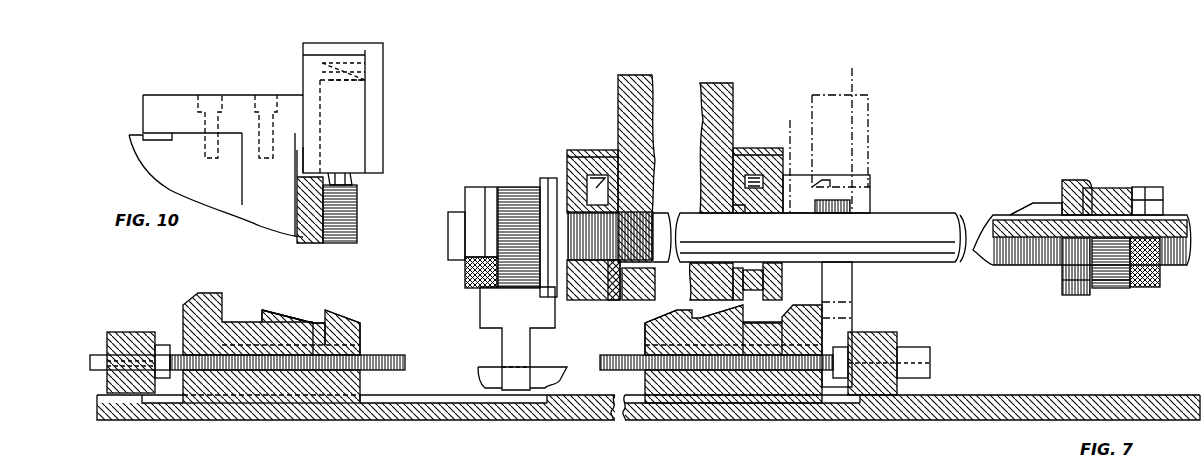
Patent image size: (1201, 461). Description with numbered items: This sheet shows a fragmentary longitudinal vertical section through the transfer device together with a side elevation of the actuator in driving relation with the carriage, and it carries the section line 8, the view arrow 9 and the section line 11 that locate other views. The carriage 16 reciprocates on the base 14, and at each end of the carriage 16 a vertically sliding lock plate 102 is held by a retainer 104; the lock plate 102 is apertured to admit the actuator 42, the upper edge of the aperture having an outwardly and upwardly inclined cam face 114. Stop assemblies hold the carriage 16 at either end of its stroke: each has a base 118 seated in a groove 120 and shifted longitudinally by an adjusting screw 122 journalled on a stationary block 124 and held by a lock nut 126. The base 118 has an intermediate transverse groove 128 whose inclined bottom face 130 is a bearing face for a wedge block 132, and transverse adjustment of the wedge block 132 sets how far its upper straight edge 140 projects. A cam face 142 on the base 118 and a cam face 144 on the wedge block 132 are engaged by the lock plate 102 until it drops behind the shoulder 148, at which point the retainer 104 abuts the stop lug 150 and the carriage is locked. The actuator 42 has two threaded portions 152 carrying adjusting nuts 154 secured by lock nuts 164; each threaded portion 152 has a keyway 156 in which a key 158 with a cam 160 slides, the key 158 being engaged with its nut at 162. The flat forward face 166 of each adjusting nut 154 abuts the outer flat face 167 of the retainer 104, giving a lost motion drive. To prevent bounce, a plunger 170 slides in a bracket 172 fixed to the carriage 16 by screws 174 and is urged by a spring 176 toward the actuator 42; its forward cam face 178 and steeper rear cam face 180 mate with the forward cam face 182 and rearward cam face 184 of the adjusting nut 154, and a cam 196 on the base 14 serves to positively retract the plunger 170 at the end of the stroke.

In FIG. 7, the section line 8- 8 is at (765, 140).
In FIG. 7, the view arrow 9 is at (163, 258).
In FIG. 7, the section line 11- 11 is at (852, 62).
In FIG. 7, the base 14 is at (1085, 395).
In FIG. 10, the carriage 16 is at (152, 162).
In FIG. 7, the carriage 16 is at (618, 85).
In FIG. 7, the actuator 42 is at (928, 215).
In FIG. 7, the sliding lock plate 102 is at (740, 195).
In FIG. 10, the retainer 104 is at (258, 218).
In FIG. 7, the retainer 104 is at (578, 152).
In FIG. 7, the cam face 114 is at (758, 208).
In FIG. 7, the base 118 is at (360, 385).
In FIG. 7, the groove 120 is at (370, 408).
In FIG. 7, the adjusting screw 122 is at (392, 352).
In FIG. 7, the stationary block 124 is at (130, 332).
In FIG. 7, the lock nut 126 is at (160, 345).
In FIG. 7, the transversely extending groove 128 is at (264, 310).
In FIG. 7, the inclined bottom face 130 is at (322, 333).
In FIG. 7, the wedge block 132 is at (306, 318).
In FIG. 7, the upper straight edge 140 is at (280, 308).
In FIG. 7, the cam face 142 is at (357, 320).
In FIG. 7, the cam face 144 is at (288, 315).
In FIG. 7, the shoulder 148 is at (263, 322).
In FIG. 7, the stop lug 150 is at (195, 305).
In FIG. 7, the threaded portion 152 is at (456, 203).
In FIG. 7, the adjusting nut 154 is at (498, 236).
In FIG. 7, the keyway 156 is at (1015, 208).
In FIG. 7, the key 158 is at (1044, 200).
In FIG. 7, the cam 160 is at (1022, 205).
In FIG. 7, the engagement 162 is at (1095, 195).
In FIG. 7, the lock nut 164 is at (465, 275).
In FIG. 10, the flat forward face 166 is at (297, 205).
In FIG. 7, the flat forward face 166 is at (580, 300).
In FIG. 7, the outer flat face 167 is at (790, 180).
In FIG. 10, the plunger 170 is at (355, 118).
In FIG. 10, the bracket 172 is at (182, 105).
In FIG. 10, the screws 174 is at (262, 98).
In FIG. 10, the spring 176 is at (360, 68).
In FIG. 10, the forward cam face 178 is at (352, 183).
In FIG. 10, the rear cam face 180 is at (350, 203).
In FIG. 7, the forward cam face 182 is at (1072, 296).
In FIG. 7, the rearward cam face 184 is at (1098, 290).
In FIG. 7, the cam 196 is at (493, 375).